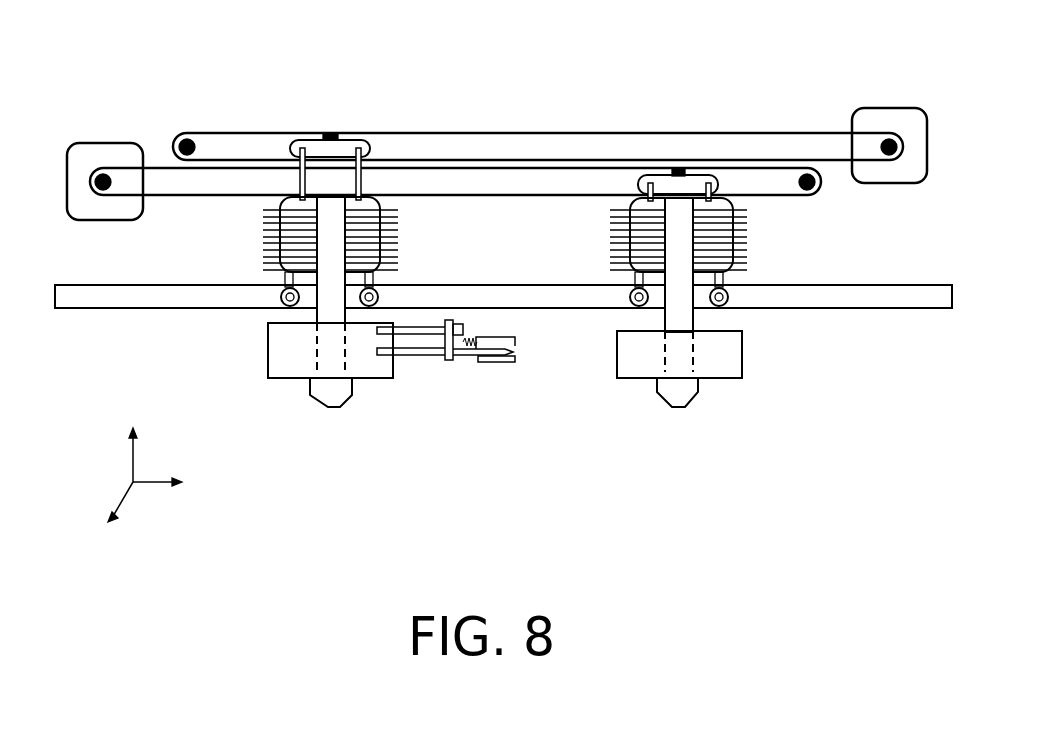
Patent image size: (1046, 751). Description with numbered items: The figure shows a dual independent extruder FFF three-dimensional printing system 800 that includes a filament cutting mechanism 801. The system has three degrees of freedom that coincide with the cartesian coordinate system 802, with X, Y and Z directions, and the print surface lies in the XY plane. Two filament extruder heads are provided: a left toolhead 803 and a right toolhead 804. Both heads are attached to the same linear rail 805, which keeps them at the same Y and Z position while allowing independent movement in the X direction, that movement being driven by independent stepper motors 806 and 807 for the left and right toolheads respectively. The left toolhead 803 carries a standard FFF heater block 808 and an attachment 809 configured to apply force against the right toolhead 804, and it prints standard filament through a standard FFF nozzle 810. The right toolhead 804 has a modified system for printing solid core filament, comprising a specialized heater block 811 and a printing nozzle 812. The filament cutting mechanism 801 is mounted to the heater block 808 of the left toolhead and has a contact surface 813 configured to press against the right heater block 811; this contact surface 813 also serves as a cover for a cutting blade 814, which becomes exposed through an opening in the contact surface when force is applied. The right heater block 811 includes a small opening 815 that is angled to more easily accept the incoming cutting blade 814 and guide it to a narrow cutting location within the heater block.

The dual independent extruder FFF 3D printing system 800 is at (140, 120).
The filament cutting mechanism 801 is at (485, 362).
The cartesian coordinate system 802 is at (100, 482).
The filament extruder head (left toolhead) 803 is at (282, 241).
The filament extruder head (right toolhead) 804 is at (632, 228).
The linear rail 805 is at (200, 299).
The stepper motor 806 is at (108, 153).
The stepper motor 807 is at (895, 118).
The heater block 808 is at (295, 357).
The attachment 809 is at (418, 355).
The FFF nozzle 810 is at (325, 395).
The heater block 811 is at (723, 363).
The printing nozzle 812 is at (673, 392).
The contact surface 813 is at (508, 362).
The cutting blade 814 is at (463, 356).
The small opening 815 is at (677, 352).